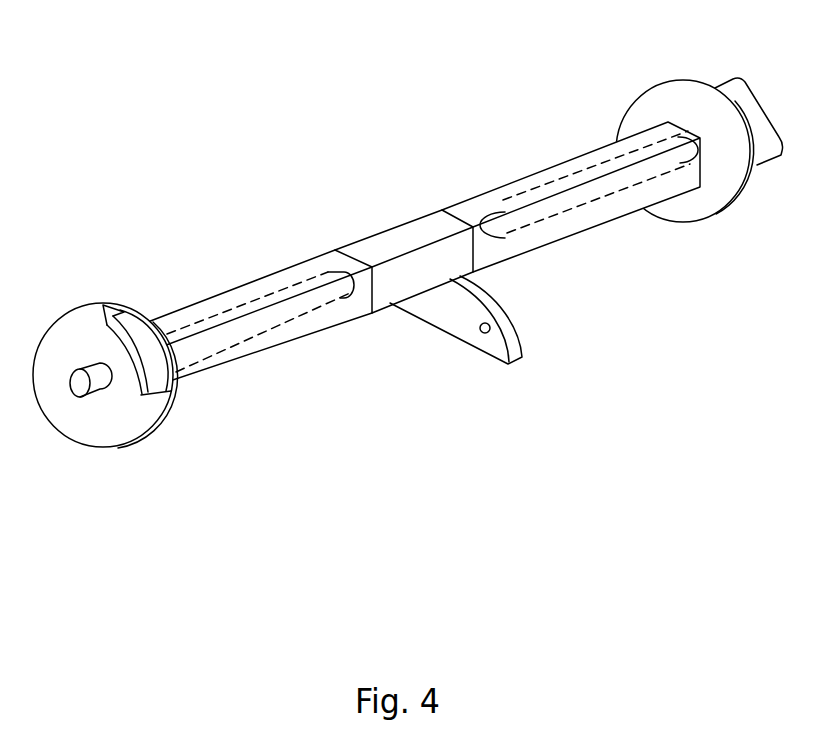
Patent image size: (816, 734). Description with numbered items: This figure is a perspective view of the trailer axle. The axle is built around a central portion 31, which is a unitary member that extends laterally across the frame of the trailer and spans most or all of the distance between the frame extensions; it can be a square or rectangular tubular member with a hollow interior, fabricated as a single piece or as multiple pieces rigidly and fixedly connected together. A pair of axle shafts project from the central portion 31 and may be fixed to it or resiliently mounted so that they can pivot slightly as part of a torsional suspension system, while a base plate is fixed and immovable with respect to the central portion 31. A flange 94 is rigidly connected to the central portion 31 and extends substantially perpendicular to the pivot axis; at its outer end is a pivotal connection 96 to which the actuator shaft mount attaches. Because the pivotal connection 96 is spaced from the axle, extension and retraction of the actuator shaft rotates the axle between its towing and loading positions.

The central portion 31 is at (316, 256).
The flange 94 is at (455, 336).
The pivotal connection 96 is at (488, 334).